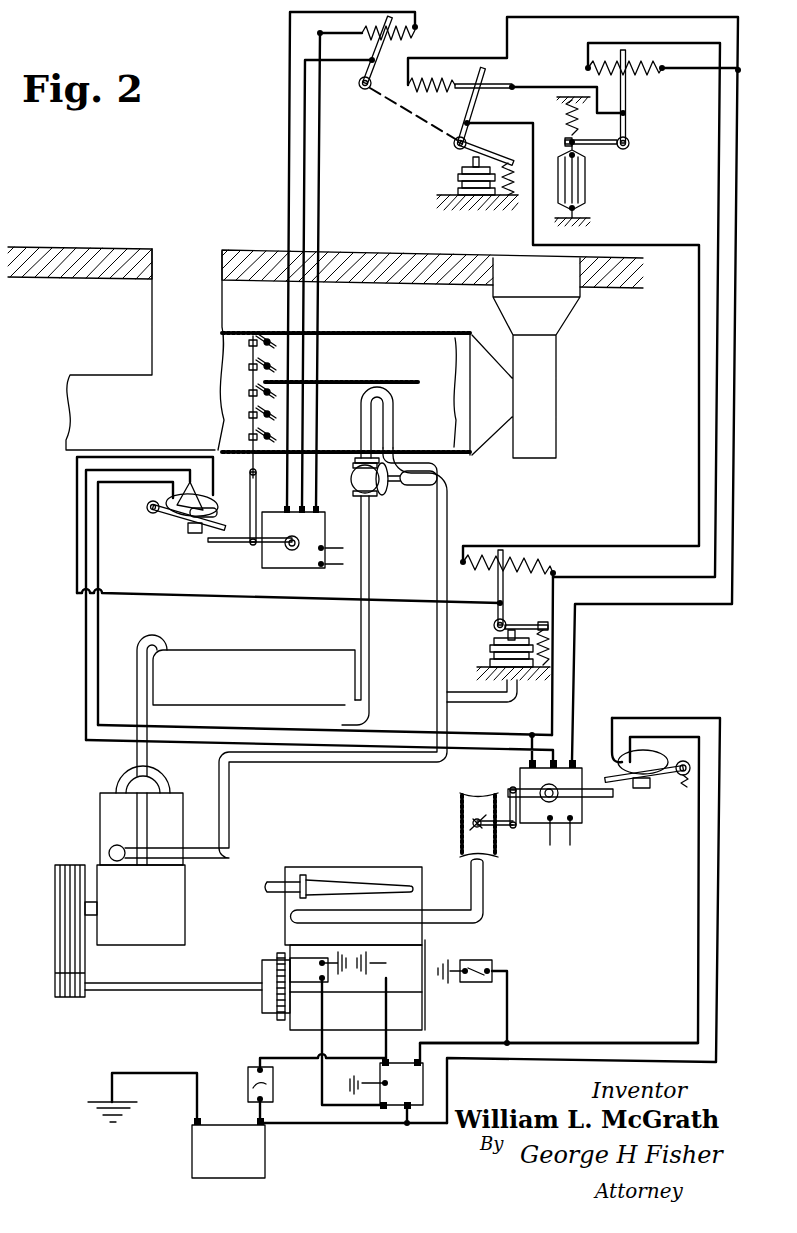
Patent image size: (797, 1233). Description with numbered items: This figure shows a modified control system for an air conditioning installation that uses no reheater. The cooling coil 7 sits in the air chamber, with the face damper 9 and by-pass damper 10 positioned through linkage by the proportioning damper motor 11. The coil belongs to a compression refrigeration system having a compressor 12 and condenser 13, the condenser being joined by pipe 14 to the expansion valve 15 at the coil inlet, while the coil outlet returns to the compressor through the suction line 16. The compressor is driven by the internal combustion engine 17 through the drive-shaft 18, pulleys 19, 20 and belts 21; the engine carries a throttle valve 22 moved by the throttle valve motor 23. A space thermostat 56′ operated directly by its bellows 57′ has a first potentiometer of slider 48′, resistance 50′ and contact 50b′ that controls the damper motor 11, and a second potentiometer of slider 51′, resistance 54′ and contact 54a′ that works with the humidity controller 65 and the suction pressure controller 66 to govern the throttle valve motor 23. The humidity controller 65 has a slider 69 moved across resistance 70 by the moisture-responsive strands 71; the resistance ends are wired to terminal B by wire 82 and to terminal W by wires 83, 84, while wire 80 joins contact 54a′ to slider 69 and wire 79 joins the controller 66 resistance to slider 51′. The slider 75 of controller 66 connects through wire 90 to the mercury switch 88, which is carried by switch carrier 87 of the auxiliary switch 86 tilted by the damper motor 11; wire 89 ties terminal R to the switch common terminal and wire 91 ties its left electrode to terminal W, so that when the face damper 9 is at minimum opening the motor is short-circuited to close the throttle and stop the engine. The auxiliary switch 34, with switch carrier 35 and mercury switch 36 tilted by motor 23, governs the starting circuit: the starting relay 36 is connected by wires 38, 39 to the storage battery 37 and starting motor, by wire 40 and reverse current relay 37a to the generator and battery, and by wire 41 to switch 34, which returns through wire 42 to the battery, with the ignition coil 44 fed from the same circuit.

The cooling coil 7 is at (364, 422).
The face damper 9 is at (251, 403).
The by-pass damper 10 is at (257, 342).
The proportioning motor 11 is at (290, 570).
The compressor 12 is at (105, 824).
The condenser 13 is at (263, 638).
The pipe 14 is at (368, 586).
The expansion valve 15 is at (377, 495).
The suction line 16 is at (436, 578).
The internal combustion engine 17 is at (346, 853).
The drive-shaft / starting motor 18 is at (212, 986).
The pulley / generator 19 is at (57, 887).
The pulley / intake manifold 20 is at (354, 919).
The belts / fuel inlet pipe 21 is at (68, 958).
The throttle valve 22 is at (460, 819).
The proportioning motor 23 is at (578, 806).
The auxiliary switch 34 is at (655, 803).
The switch carrier 35 is at (675, 789).
The mercury switch / automatic starting relay 36 is at (660, 758).
The storage battery 37 is at (176, 1125).
The reverse current relay 37a is at (250, 1085).
The wire 38 is at (344, 1124).
The wire 39 is at (320, 1040).
The wire 40 is at (384, 1016).
The wire 41 is at (566, 1042).
The wire 42 is at (552, 1060).
The ignition coil 44 is at (470, 962).
The slider 48′ is at (373, 66).
The resistance 50′ is at (364, 42).
The contact 50b′ is at (343, 30).
The slider 51′ is at (478, 107).
The resistance 54′ is at (448, 88).
The contact 54a′ is at (486, 86).
The space thermostat 56′ is at (390, 133).
The space thermostat bellows 57′ is at (458, 182).
The humidity controller 65 is at (713, 153).
The suction pressure controller 66 is at (455, 632).
The slider 69 is at (628, 103).
The resistance 70 is at (630, 74).
The humidity responsive device 71 is at (576, 194).
The slider 75 is at (497, 588).
The wire 79 is at (612, 545).
The wire 80 is at (549, 84).
The wire 82 is at (708, 40).
The wire 83 is at (588, 54).
The wire 84 is at (552, 701).
The auxiliary switch 86 is at (158, 544).
The switch carrier 87 is at (172, 520).
The mercury switch 88 is at (210, 505).
The wire 89 is at (492, 750).
The wire 90 is at (232, 592).
The wire 91 is at (418, 730).